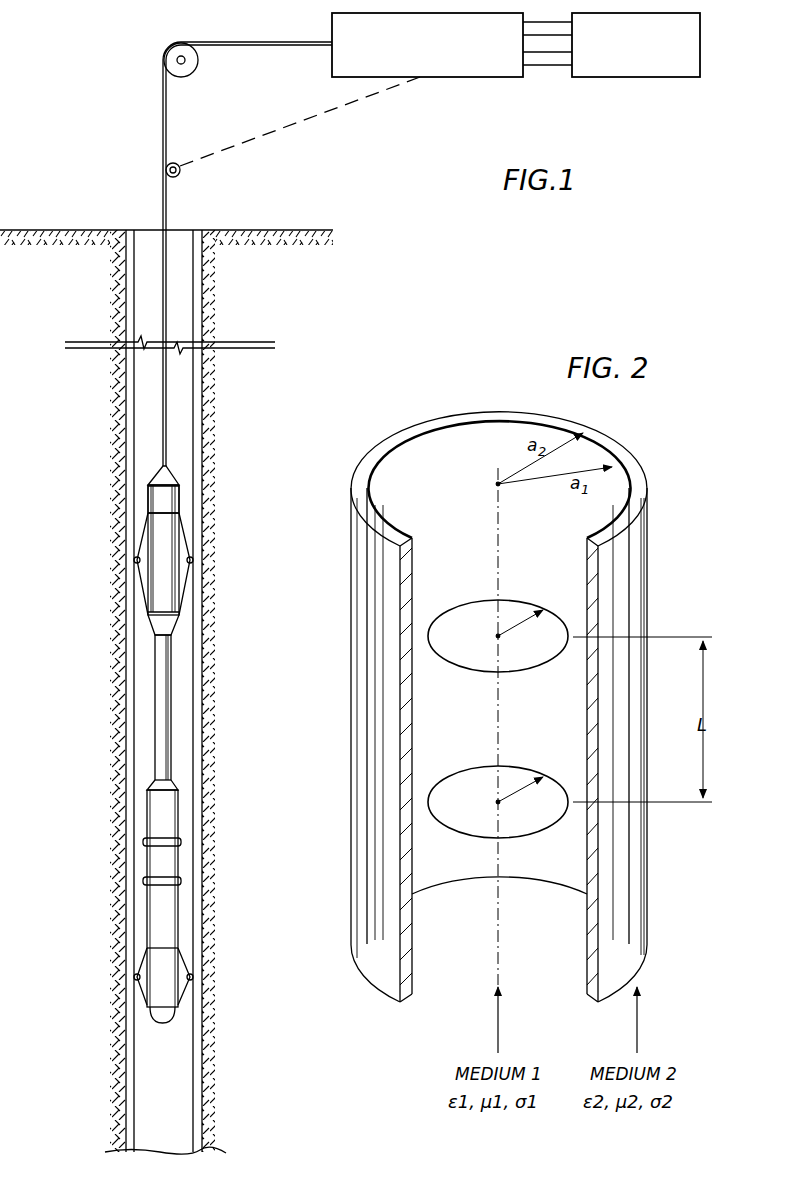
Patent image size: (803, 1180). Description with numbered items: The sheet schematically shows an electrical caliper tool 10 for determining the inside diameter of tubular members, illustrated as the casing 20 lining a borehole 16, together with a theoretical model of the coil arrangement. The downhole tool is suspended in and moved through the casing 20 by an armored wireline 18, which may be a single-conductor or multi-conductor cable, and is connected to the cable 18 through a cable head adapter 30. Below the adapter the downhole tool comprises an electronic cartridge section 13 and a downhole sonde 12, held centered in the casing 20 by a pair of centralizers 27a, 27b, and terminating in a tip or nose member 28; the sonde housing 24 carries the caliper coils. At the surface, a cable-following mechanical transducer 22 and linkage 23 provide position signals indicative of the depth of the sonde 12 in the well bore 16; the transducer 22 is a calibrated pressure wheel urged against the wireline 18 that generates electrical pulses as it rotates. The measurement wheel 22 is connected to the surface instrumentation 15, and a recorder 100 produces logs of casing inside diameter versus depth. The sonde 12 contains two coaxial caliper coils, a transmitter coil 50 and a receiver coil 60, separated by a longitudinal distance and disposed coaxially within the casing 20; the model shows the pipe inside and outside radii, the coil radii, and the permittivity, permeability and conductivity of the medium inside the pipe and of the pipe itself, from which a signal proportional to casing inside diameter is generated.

In FIG. 1, the electrical caliper tool 10 is at (119, 98).
In FIG. 1, the downhole sonde 12 is at (179, 826).
In FIG. 1, the electronic cartridge section 13 is at (171, 710).
In FIG. 1, the surface instrumentation 15 is at (465, 78).
In FIG. 1, the borehole 16 is at (144, 238).
In FIG. 1, the wireline 18 is at (162, 174).
In FIG. 1, the casing 20 is at (126, 278).
In FIG. 2, the casing 20 is at (648, 545).
In FIG. 1, the cable-following mechanical transducer 22 is at (180, 174).
In FIG. 1, the linkage 23 is at (316, 116).
In FIG. 1, the tool housing 24 is at (140, 808).
In FIG. 1, the centralizer 27a is at (143, 967).
In FIG. 1, the centralizer 27b is at (143, 534).
In FIG. 1, the nose member 28 is at (157, 1017).
In FIG. 1, the cable head adapter 30 is at (155, 494).
In FIG. 1, the transmitter coil 50 is at (143, 881).
In FIG. 2, the transmitter coil 50 is at (547, 836).
In FIG. 1, the receiver coil 60 is at (143, 842).
In FIG. 2, the receiver coil 60 is at (535, 670).
In FIG. 1, the recorder 100 is at (632, 78).